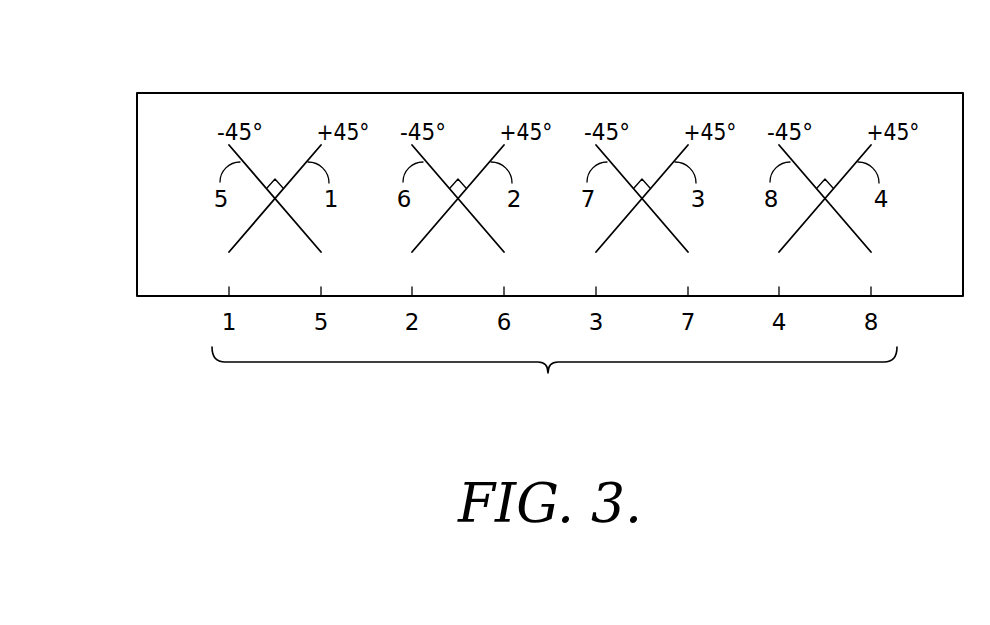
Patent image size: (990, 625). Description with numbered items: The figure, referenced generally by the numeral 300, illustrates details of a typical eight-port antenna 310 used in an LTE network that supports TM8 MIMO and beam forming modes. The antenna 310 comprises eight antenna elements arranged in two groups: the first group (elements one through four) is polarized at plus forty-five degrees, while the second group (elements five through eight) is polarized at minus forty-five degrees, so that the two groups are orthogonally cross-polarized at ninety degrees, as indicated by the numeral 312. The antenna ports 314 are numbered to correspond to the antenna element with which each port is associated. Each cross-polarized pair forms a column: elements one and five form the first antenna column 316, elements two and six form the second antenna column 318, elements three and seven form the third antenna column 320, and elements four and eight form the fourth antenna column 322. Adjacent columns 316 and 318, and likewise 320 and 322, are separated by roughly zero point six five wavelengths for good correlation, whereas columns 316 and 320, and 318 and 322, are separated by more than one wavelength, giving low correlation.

The exemplary illustration of an 8-port antenna 300 is at (93, 100).
The 8-port antenna 310 is at (663, 95).
The orthogonal cross-polarization 312 is at (825, 179).
The antenna ports 314 is at (554, 377).
The first antenna column 316 is at (322, 253).
The second antenna column 318 is at (505, 253).
The third antenna column 320 is at (689, 253).
The fourth antenna column 322 is at (872, 253).